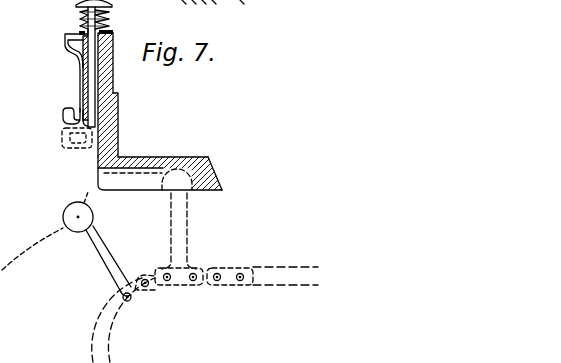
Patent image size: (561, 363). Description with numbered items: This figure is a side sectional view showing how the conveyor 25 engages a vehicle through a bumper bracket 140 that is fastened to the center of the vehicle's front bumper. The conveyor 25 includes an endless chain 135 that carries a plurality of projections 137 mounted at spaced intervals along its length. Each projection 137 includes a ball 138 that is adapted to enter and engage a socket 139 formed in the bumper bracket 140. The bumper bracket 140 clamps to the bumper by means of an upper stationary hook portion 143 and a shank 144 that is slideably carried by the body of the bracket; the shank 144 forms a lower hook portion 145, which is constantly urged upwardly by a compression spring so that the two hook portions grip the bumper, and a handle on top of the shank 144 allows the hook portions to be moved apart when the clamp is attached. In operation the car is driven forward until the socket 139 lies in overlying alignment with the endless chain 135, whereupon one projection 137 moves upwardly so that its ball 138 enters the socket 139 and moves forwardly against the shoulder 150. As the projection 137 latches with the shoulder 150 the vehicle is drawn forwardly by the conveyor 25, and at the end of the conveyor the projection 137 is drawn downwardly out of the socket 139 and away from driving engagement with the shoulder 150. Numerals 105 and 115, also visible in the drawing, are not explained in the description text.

The conveyor 25 is at (112, 341).
The support member 105 is at (239, 12).
The frame member 115 is at (14, 8).
The endless chain 135 is at (108, 308).
The projection 137 is at (178, 223).
The ball 138 is at (178, 182).
The socket 139 is at (146, 172).
The bumper bracket 140 is at (118, 110).
The upper stationary hook portion 143 is at (73, 38).
The shank 144 is at (93, 73).
The lower hook portion 145 is at (68, 115).
The shoulder 150 is at (214, 172).